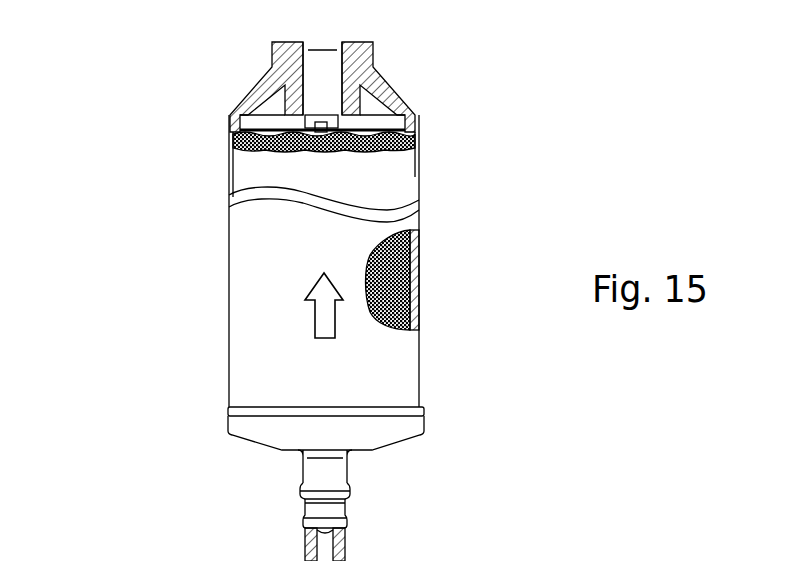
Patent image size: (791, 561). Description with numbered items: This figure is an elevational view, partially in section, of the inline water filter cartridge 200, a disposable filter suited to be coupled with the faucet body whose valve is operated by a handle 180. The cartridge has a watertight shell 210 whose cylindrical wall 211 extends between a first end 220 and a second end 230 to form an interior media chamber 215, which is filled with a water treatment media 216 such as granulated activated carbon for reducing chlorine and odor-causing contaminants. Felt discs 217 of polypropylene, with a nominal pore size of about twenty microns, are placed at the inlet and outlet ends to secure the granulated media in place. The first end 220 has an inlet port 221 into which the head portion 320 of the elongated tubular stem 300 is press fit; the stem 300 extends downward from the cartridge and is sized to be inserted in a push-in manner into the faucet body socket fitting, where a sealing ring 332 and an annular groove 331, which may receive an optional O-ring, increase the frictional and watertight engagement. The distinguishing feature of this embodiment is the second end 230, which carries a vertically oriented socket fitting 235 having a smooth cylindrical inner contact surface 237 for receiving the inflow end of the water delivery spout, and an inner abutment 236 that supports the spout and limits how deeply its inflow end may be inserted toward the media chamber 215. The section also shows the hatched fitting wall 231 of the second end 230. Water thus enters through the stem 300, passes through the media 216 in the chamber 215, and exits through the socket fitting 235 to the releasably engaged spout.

The water filter cartridge 200 is at (160, 246).
The watertight shell 210 is at (256, 343).
The cylindrical wall 211 is at (420, 256).
The interior media chamber 215 is at (392, 292).
The water treatment media 216 is at (436, 285).
The felt disc 217 is at (343, 138).
The first end 220 is at (267, 436).
The inlet port 221 is at (348, 455).
The second end 230 is at (418, 108).
The cap body 231 is at (288, 62).
The socket fitting 235 is at (320, 80).
The inner abutment 236 is at (297, 122).
The inner contact surface 237 is at (338, 70).
The tubular stem 300 is at (347, 537).
The head portion 320 is at (354, 505).
The annular groove 331 is at (305, 520).
The sealing ring 332 is at (302, 495).
The handle 180 is at (604, 549).